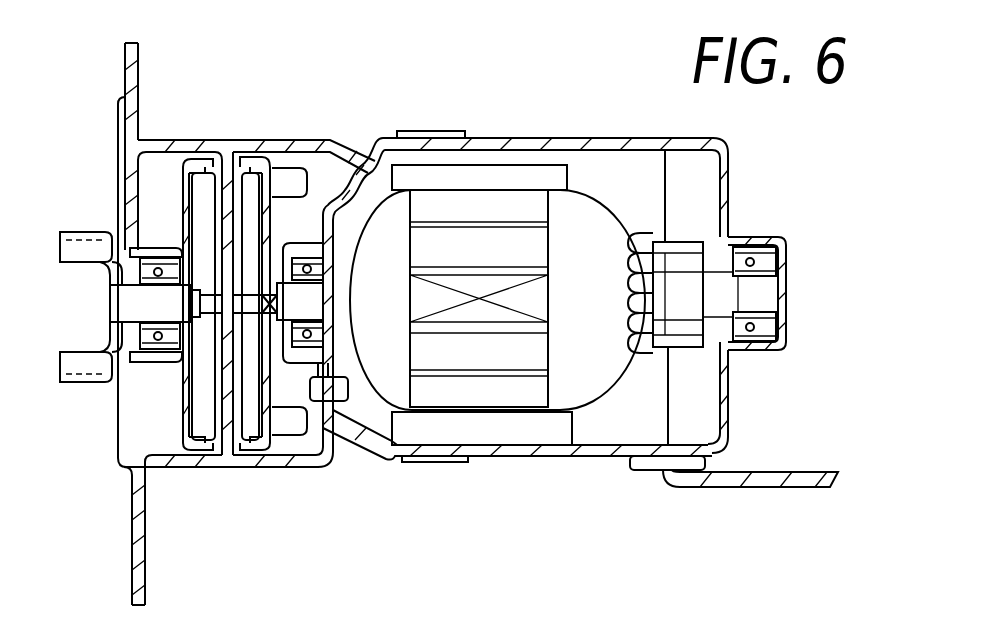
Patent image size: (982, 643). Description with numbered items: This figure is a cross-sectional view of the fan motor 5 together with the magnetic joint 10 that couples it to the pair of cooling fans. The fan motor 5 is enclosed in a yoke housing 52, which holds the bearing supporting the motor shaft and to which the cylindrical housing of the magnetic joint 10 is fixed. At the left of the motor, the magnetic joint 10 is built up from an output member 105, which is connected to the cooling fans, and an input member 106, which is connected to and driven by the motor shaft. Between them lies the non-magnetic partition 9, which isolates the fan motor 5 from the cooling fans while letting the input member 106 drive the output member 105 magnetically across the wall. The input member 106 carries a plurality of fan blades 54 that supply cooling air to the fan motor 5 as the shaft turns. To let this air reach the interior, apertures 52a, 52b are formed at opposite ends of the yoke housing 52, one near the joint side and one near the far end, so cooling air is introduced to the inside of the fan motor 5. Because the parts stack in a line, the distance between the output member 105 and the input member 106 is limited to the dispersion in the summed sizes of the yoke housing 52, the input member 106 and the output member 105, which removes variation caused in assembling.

The fan motor 5 is at (571, 299).
The non-magnetic partition 9 is at (237, 445).
The magnetic joint 10 is at (236, 160).
The output member 105 is at (213, 128).
The input member 106 is at (263, 141).
The yoke housing 52 is at (397, 462).
The aperture 52a is at (322, 212).
The aperture 52b is at (728, 383).
The fan blades 54 is at (290, 427).